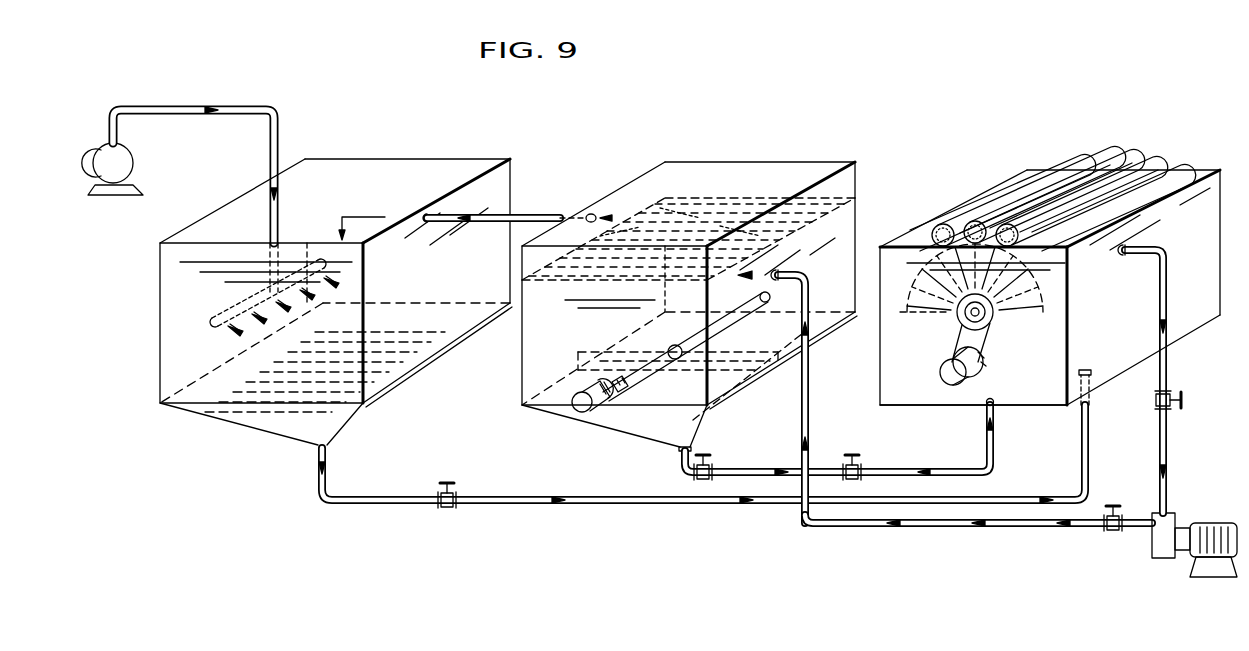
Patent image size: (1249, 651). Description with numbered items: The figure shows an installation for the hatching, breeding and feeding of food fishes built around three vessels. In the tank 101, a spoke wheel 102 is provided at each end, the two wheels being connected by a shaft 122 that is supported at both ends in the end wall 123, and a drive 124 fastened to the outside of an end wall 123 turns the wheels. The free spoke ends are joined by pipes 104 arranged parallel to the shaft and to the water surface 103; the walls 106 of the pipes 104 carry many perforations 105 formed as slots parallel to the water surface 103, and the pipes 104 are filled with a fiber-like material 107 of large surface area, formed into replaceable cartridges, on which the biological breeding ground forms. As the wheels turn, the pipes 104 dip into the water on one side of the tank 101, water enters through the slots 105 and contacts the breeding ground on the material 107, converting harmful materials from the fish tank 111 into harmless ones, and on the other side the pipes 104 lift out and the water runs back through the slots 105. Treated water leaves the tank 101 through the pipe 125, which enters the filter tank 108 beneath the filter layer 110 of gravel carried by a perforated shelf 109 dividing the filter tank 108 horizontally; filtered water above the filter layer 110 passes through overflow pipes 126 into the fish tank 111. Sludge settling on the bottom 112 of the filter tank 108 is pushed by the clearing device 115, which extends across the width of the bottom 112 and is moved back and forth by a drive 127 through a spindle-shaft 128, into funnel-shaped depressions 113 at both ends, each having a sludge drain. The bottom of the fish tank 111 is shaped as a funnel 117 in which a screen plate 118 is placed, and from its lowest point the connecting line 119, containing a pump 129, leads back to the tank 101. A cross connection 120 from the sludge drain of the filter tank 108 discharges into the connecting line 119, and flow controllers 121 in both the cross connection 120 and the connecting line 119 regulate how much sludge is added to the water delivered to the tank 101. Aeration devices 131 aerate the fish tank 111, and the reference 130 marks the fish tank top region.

The tank 101 is at (1190, 172).
The spoke wheel 102 is at (905, 300).
The water surface 103 is at (892, 260).
The pipes 104 is at (1096, 165).
The perforations (slots) 105 is at (972, 220).
The pipe walls 106 is at (1012, 205).
The material 107 is at (935, 224).
The filter tank 108 is at (688, 168).
The perforated shelf 109 is at (820, 205).
The filter layer 110 is at (726, 195).
The fish tank 111 is at (338, 167).
The bottom 112 is at (782, 335).
The funnel-shaped depressions 113 is at (688, 447).
The clearing device 115 is at (672, 352).
The funnel 117 is at (305, 437).
The screen plate 118 is at (390, 335).
The connecting line 119 is at (407, 505).
The cross connection 120 is at (792, 476).
The flow controllers 121 is at (448, 508).
The shaft 122 is at (985, 318).
The end wall 123 is at (1042, 405).
The drive 124 is at (957, 386).
The pipe 125 is at (873, 528).
The overflow pipes 126 is at (535, 216).
The drive 127 is at (582, 412).
The spindle-shaft 128 is at (630, 380).
The pump 129 is at (1167, 557).
The tank top 130 is at (445, 175).
The aeration devices 131 is at (105, 150).